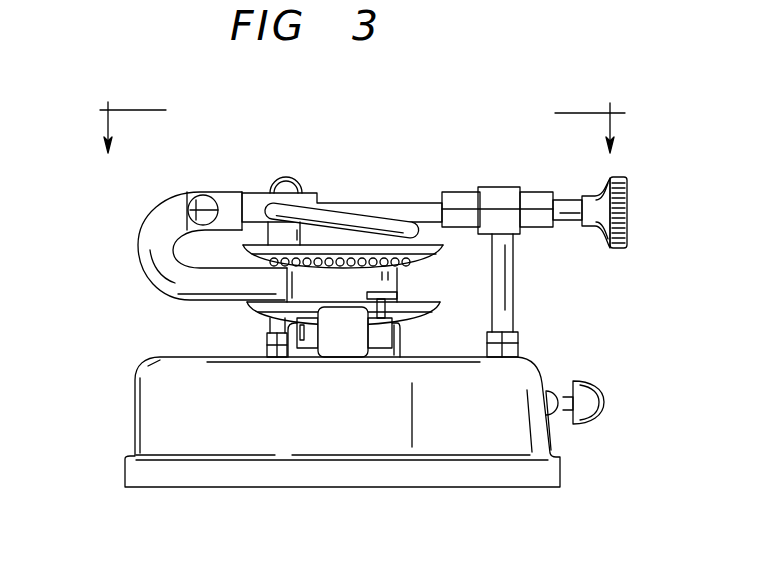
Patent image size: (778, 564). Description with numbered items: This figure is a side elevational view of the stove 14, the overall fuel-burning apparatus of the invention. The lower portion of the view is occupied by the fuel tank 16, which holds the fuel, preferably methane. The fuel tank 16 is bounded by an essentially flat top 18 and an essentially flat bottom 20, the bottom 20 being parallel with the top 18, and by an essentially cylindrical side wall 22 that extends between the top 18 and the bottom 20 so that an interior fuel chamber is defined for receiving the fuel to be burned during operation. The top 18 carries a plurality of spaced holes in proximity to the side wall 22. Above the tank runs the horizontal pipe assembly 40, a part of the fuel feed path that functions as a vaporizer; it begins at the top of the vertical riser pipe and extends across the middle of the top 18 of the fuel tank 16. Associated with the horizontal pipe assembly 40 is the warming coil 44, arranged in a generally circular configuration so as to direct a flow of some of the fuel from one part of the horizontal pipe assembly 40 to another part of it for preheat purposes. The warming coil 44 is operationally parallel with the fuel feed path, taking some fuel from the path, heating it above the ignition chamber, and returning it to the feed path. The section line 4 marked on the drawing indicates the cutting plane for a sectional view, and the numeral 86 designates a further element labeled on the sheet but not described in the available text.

The section line 4- 4 is at (362, 115).
The stove 14 is at (643, 216).
The fuel tank 16 is at (135, 377).
The top 18 is at (185, 356).
The bottom 20 is at (227, 487).
The side wall 22 is at (133, 422).
The horizontal pipe assembly 40 is at (366, 197).
The warming coil 44 is at (418, 200).
The side adjustment knob 86 is at (608, 472).